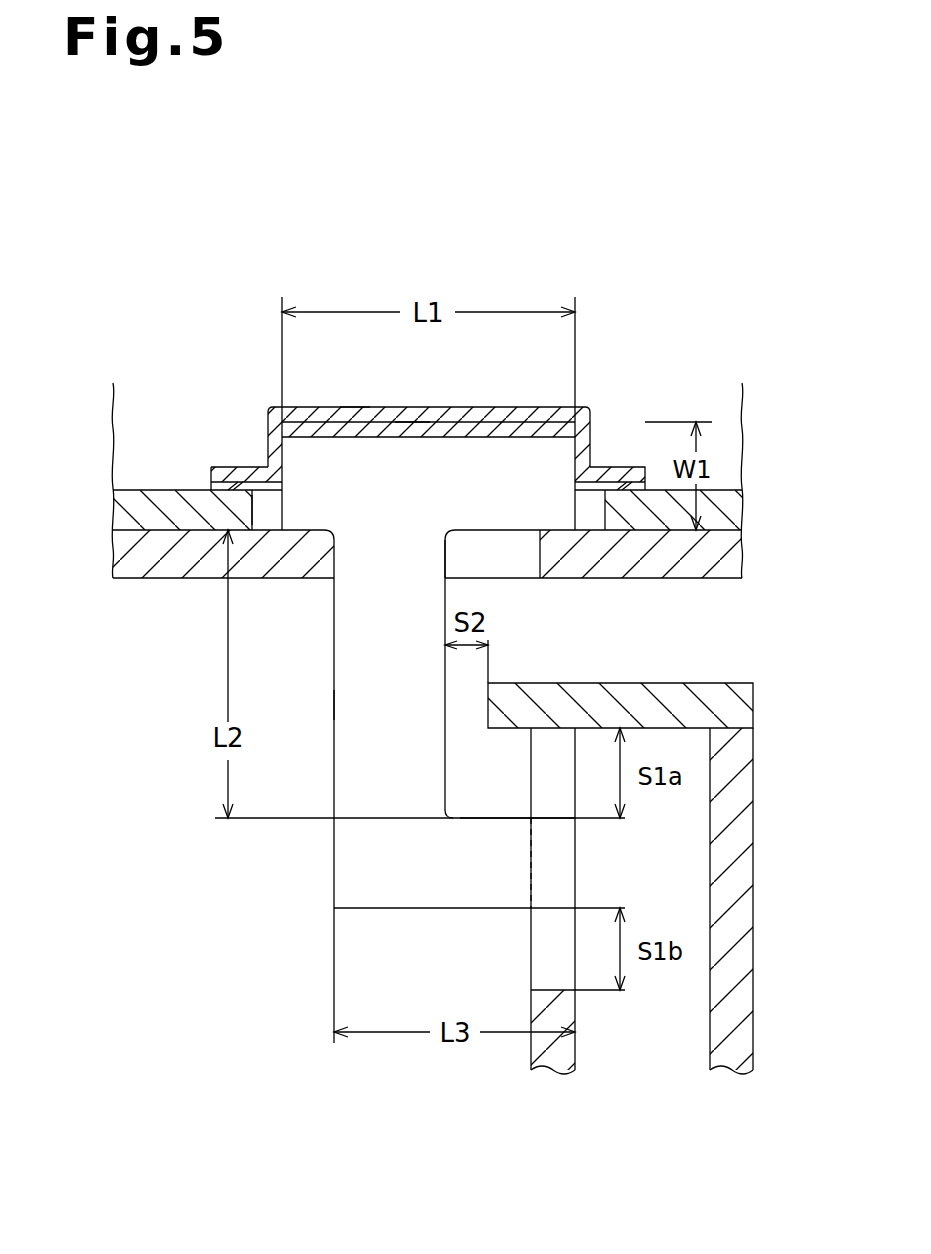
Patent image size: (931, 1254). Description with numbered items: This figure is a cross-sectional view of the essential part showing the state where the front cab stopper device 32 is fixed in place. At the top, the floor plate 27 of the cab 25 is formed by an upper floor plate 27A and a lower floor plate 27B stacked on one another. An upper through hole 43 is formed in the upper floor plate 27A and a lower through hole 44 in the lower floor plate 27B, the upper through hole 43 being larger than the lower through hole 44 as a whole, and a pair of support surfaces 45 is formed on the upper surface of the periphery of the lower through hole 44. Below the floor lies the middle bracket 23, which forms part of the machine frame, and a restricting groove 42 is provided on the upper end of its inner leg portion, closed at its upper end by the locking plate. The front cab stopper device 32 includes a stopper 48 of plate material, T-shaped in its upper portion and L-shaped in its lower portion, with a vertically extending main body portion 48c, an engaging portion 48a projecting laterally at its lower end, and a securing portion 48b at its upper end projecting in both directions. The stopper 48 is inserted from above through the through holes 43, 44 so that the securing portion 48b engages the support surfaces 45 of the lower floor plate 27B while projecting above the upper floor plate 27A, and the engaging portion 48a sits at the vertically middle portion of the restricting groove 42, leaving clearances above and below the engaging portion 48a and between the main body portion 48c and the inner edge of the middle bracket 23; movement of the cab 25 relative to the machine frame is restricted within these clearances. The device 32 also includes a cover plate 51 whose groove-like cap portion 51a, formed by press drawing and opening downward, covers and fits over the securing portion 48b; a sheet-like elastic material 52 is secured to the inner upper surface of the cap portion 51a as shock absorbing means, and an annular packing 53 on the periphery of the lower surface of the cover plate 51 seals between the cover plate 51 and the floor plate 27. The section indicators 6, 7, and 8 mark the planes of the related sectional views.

The middle bracket 23 is at (753, 742).
The cab 25 is at (742, 432).
The floor plate 27 is at (67, 637).
The upper floor plate 27A is at (147, 520).
The lower floor plate 27B is at (187, 570).
The front cab stopper device 32 is at (347, 405).
The restricting groove 42 is at (548, 988).
The upper through hole 43 is at (598, 515).
The lower through hole 44 is at (523, 560).
The support surfaces 45 is at (297, 523).
The stopper 48 is at (342, 897).
The engaging portion 48a is at (507, 830).
The securing portion 48b is at (533, 453).
The main body portion 48c is at (353, 705).
The cover plate 51 is at (235, 470).
The cap portion 51a is at (407, 415).
The elastic material 52 is at (487, 427).
The packing 53 is at (645, 483).
The section line 6 is at (83, 492).
The section line 7 is at (322, 767).
The section line 8 is at (307, 385).